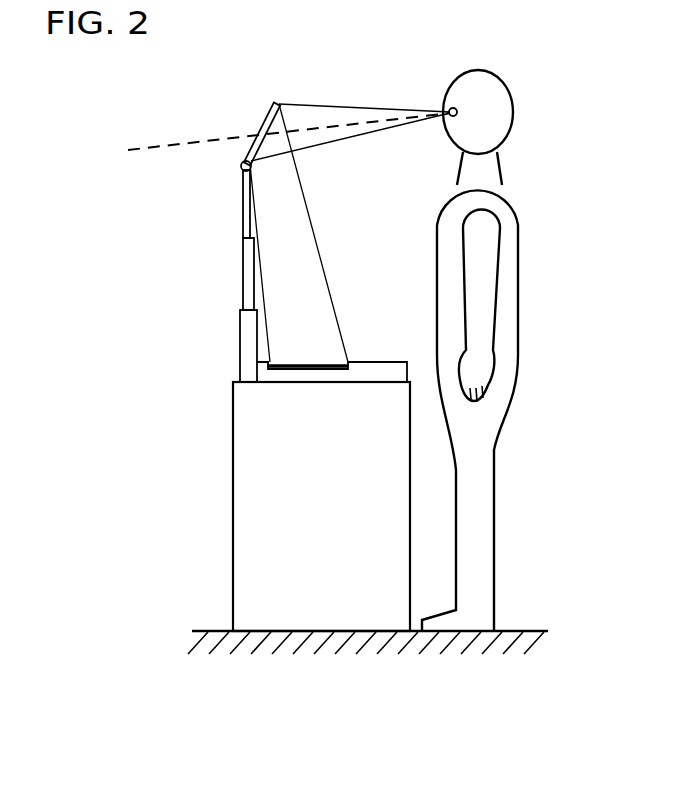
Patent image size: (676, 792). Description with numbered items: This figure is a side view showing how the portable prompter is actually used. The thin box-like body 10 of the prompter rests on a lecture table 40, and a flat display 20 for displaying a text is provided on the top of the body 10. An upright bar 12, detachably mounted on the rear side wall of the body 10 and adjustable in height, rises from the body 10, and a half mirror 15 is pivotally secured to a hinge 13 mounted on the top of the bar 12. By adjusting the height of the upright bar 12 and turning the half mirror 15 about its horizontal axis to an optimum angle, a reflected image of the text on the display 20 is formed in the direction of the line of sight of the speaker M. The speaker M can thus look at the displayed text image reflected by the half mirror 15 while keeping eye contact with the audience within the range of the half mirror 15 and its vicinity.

The box-like body 10 is at (368, 376).
The upright bar 12 is at (243, 268).
The hinge 13 is at (241, 166).
The half mirror 15 is at (269, 103).
The flat display 20 is at (302, 367).
The lecture table 40 is at (240, 495).
The speaker M is at (512, 113).